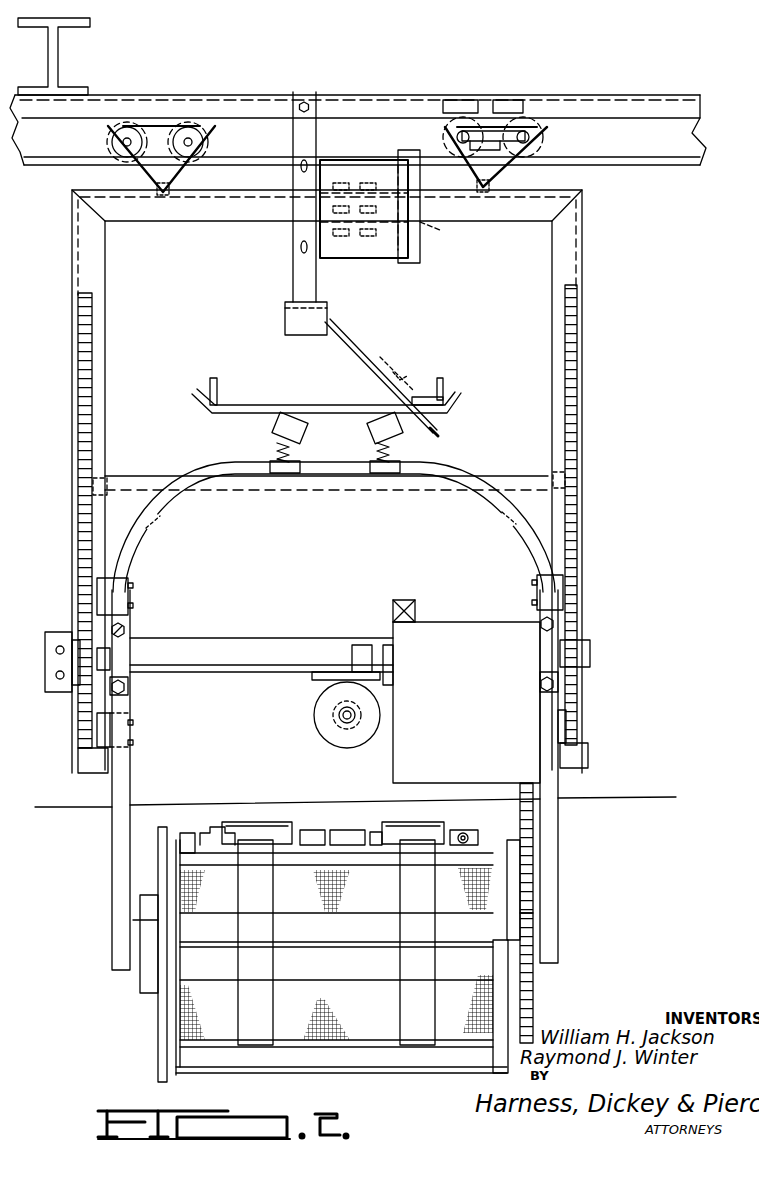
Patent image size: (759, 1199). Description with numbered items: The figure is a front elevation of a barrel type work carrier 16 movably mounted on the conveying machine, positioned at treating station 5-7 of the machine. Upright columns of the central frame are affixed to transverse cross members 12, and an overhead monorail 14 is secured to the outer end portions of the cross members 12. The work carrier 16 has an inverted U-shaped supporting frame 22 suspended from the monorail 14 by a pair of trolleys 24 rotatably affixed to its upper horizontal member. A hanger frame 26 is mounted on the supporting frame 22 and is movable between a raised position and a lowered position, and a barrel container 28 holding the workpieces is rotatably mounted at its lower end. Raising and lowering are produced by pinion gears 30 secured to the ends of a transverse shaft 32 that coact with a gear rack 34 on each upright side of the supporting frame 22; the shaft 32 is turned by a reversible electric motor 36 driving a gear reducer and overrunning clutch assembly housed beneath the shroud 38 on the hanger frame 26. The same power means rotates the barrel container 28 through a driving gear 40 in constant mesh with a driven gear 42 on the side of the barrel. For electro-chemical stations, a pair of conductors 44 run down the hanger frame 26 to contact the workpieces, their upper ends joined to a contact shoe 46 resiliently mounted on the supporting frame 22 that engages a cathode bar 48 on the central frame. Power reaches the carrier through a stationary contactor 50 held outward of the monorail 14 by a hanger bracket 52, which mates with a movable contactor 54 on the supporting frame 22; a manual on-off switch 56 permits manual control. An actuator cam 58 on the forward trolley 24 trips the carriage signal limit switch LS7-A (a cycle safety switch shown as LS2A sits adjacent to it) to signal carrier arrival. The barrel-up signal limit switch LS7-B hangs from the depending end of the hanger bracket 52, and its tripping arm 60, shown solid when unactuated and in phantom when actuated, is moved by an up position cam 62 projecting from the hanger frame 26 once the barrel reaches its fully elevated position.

The transverse cross member 12 is at (58, 53).
The overhead monorail 14 is at (668, 165).
The work carrier 16 is at (605, 524).
The supporting frame 22 is at (567, 252).
The trolley 24 is at (133, 177).
The hanger frame 26 is at (127, 787).
The barrel container 28 is at (197, 1012).
The pinion gear 30 is at (96, 648).
The transverse shaft 32 is at (207, 660).
The gear rack 34 is at (82, 537).
The reversible electric motor 36 is at (330, 707).
The shroud 38 is at (470, 703).
The driving gear 40 is at (532, 823).
The driven gear 42 is at (532, 880).
The conductor 44 is at (183, 510).
The contact shoe 46 is at (267, 428).
The cathode bar 48 is at (267, 403).
The stationary contactor 50 is at (365, 250).
The hanger bracket 52 is at (302, 233).
The movable contactor 54 is at (433, 226).
The manual on-off switch 56 is at (48, 668).
The actuator cam 58 is at (473, 186).
The tripping arm 60 is at (395, 345).
The up position cam 62 is at (405, 378).
The limit switch LS2A is at (460, 100).
The carriage signal limit switch LS7-A is at (505, 107).
The barrel-up signal limit switch LS7-B is at (287, 317).
The section indicator 5-7 is at (328, 71).